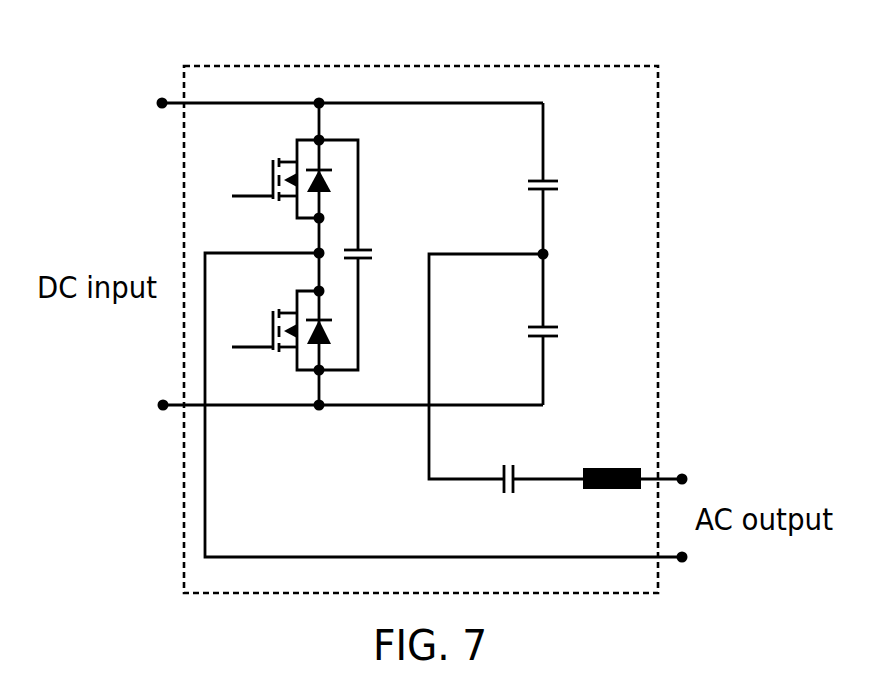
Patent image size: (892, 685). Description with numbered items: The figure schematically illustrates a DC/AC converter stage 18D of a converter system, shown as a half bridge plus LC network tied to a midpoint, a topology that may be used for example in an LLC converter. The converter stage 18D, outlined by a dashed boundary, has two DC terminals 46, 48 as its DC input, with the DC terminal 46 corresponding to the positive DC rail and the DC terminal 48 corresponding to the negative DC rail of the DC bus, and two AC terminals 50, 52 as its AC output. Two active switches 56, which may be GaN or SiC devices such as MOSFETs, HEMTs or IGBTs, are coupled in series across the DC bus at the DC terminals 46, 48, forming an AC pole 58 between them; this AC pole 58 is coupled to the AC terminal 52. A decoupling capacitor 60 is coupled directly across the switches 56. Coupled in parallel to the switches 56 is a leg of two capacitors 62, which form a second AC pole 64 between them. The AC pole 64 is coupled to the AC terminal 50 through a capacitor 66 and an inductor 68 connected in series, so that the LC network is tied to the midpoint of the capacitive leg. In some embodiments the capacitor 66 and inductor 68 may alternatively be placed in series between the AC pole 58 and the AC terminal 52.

The converter stage 18D is at (659, 87).
The DC terminal 46 is at (162, 98).
The DC terminal 48 is at (163, 400).
The AC terminal 50 is at (682, 474).
The AC terminal 52 is at (682, 562).
The active switches 56 is at (255, 180).
The AC pole 58 is at (314, 251).
The decoupling capacitor 60 is at (370, 246).
The capacitors 62 is at (552, 178).
The AC pole 64 is at (538, 253).
The capacitor 66 is at (502, 462).
The inductor 68 is at (614, 467).